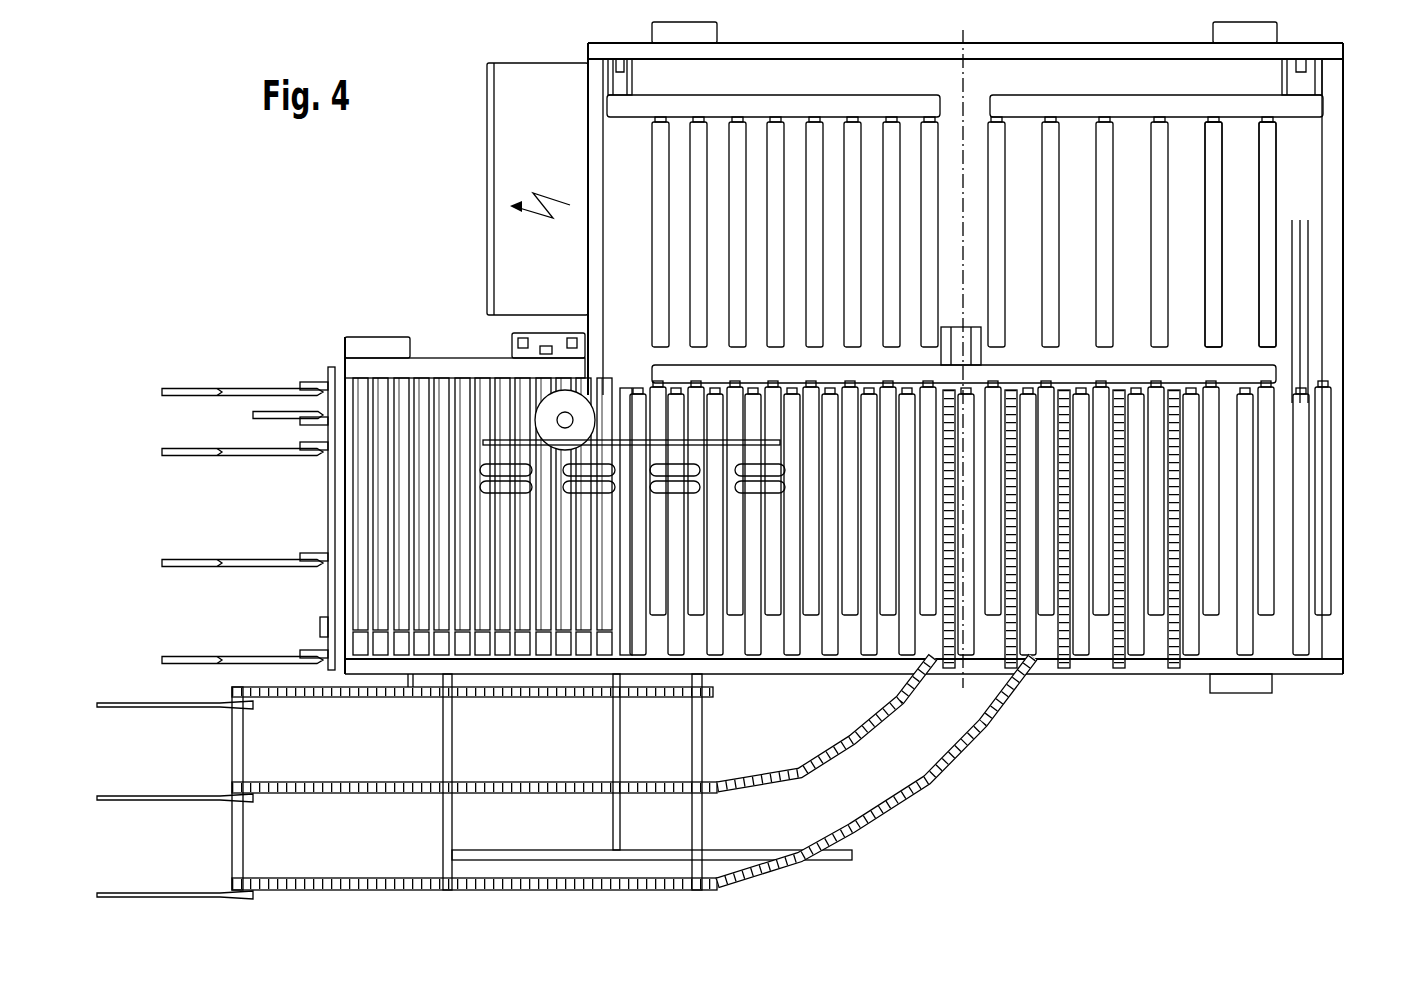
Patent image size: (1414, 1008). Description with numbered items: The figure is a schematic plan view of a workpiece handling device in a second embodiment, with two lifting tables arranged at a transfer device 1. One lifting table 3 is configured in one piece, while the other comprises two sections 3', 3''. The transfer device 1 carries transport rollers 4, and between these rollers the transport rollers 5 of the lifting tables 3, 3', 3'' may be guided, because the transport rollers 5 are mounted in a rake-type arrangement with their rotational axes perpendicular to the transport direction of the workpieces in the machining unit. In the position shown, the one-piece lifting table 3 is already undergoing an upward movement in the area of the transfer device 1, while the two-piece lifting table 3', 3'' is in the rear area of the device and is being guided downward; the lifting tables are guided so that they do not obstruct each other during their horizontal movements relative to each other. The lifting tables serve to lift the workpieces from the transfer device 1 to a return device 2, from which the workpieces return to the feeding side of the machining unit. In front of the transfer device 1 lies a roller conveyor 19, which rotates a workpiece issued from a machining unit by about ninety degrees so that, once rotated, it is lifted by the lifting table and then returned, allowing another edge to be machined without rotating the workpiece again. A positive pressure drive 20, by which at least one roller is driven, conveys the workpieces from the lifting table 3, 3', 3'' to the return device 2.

The transfer device 1 is at (1285, 688).
The return device 2 is at (322, 344).
The lifting table 3 is at (1016, 344).
The lifting table section 3' is at (725, 221).
The lifting table section 3'' is at (1195, 221).
The transport rollers 4 is at (1190, 637).
The transport rollers 5 is at (1215, 270).
The roller conveyor 19 is at (932, 782).
The positive pressure drive 20 is at (482, 470).